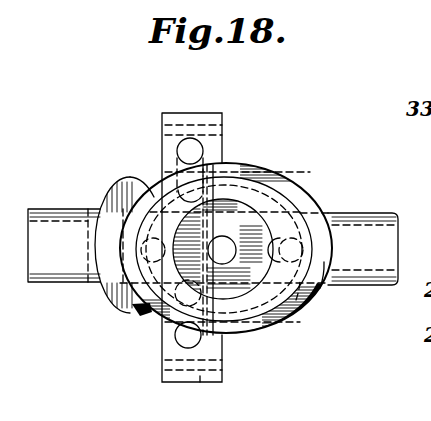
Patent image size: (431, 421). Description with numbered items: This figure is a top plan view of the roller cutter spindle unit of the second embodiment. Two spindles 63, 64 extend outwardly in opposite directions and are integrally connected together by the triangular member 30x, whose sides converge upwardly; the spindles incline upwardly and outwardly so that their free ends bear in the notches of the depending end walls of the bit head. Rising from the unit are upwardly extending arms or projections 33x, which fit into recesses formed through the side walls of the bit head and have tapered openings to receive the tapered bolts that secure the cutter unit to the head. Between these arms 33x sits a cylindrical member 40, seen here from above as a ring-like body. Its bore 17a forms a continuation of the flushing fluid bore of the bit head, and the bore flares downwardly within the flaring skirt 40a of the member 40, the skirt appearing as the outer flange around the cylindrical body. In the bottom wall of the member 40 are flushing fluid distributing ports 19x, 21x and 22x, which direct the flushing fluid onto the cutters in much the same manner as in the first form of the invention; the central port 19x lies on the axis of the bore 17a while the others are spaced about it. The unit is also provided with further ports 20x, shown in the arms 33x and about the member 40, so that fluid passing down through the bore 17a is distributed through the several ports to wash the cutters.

The spindle 63 is at (72, 226).
The spindle 64 is at (362, 232).
The flushing fluid distributing port 21x is at (79, 288).
The flaring skirt 40a is at (140, 288).
The cylindrical member 40 is at (262, 205).
The bore 17a is at (243, 197).
The flushing fluid distributing port 19x is at (223, 252).
The triangular member 30x is at (150, 313).
The upwardly extending arm 33x is at (180, 120).
The port 20x is at (178, 152).
The flushing fluid distributing port 22x is at (298, 318).